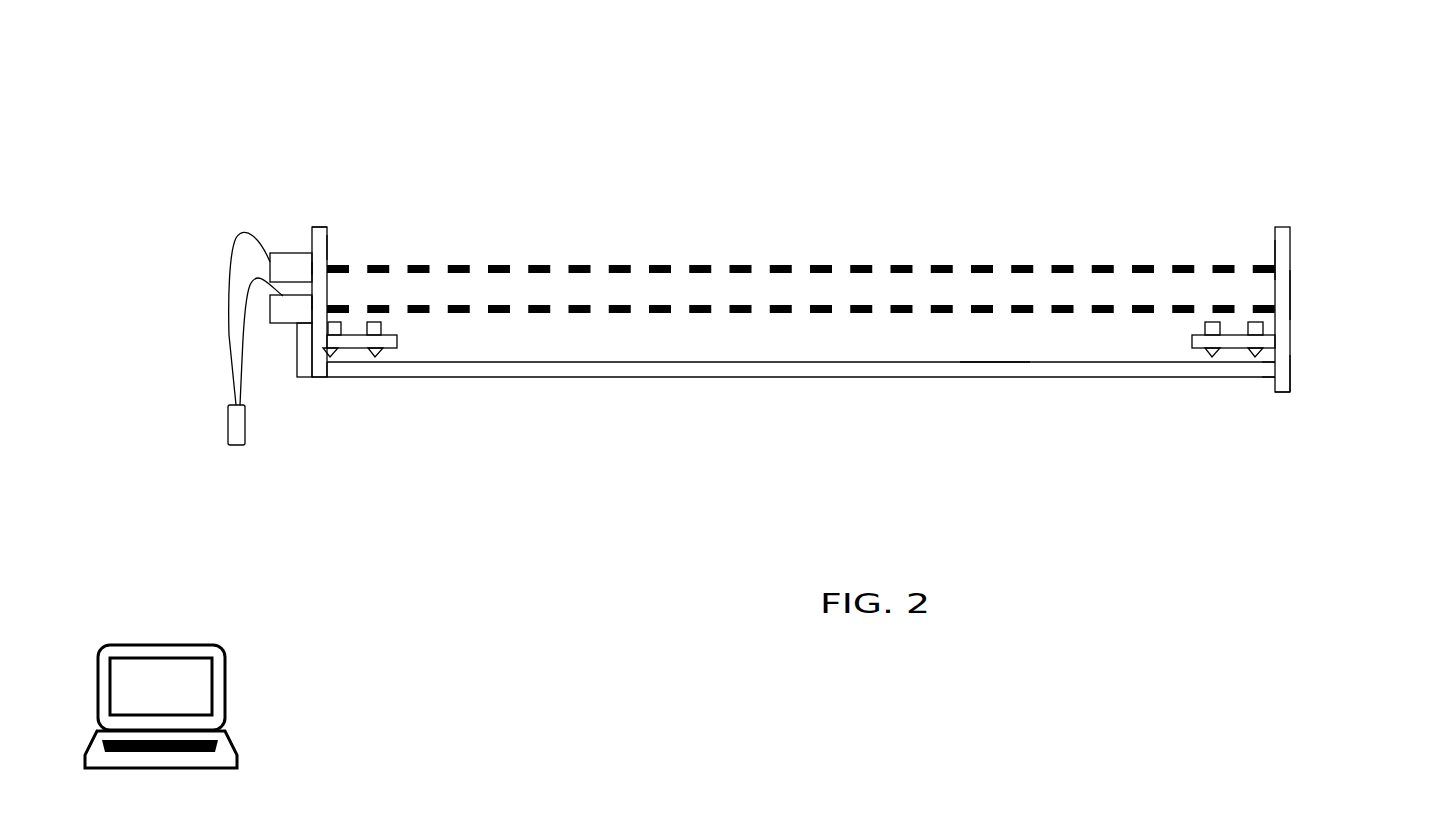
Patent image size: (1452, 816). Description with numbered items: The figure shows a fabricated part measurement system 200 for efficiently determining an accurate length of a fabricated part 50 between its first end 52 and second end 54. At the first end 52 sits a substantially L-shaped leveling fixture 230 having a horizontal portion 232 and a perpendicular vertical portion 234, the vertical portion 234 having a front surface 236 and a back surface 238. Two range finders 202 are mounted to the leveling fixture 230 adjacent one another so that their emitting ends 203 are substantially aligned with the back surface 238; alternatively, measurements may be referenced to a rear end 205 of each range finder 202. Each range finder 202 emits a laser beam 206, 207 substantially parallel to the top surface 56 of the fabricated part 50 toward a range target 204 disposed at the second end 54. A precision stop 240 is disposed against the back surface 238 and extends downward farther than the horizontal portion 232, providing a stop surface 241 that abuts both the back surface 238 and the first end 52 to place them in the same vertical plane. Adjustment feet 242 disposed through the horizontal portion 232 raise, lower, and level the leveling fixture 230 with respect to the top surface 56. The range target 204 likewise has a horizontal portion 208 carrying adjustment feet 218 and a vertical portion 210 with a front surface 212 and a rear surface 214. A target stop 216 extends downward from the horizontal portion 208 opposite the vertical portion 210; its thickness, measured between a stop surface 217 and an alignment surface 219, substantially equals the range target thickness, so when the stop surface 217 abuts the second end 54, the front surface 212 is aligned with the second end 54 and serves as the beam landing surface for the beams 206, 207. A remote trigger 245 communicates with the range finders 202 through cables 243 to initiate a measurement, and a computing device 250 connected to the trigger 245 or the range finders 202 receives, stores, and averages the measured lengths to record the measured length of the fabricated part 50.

The fabricated part measurement system 200 is at (478, 108).
The range finder 202 is at (297, 247).
The emitting end 203 is at (313, 270).
The range target 204 is at (1340, 265).
The rear end 205 is at (227, 256).
The laser beam 206 is at (625, 265).
The laser beam 207 is at (780, 313).
The horizontal portion 208 is at (1192, 343).
The vertical portion 210 is at (1290, 229).
The front surface 212 is at (1275, 262).
The rear surface 214 is at (1290, 291).
The target stop 216 is at (1285, 392).
The stop surface 217 is at (1263, 365).
The adjustment feet 218 is at (1250, 353).
The alignment surface 219 is at (1290, 371).
The leveling fixture 230 is at (352, 222).
The horizontal portion 232 is at (397, 341).
The vertical portion 234 is at (322, 228).
The front surface 236 is at (327, 245).
The back surface 238 is at (310, 227).
The precision stop 240 is at (307, 380).
The stop surface 241 is at (329, 373).
The adjustment feet 242 is at (342, 350).
The cable 243 is at (228, 330).
The remote trigger 245 is at (236, 447).
The computing device 250 is at (190, 680).
The fabricated part 50 is at (820, 378).
The first end 52 is at (320, 380).
The second end 54 is at (1262, 378).
The top surface 56 is at (993, 360).